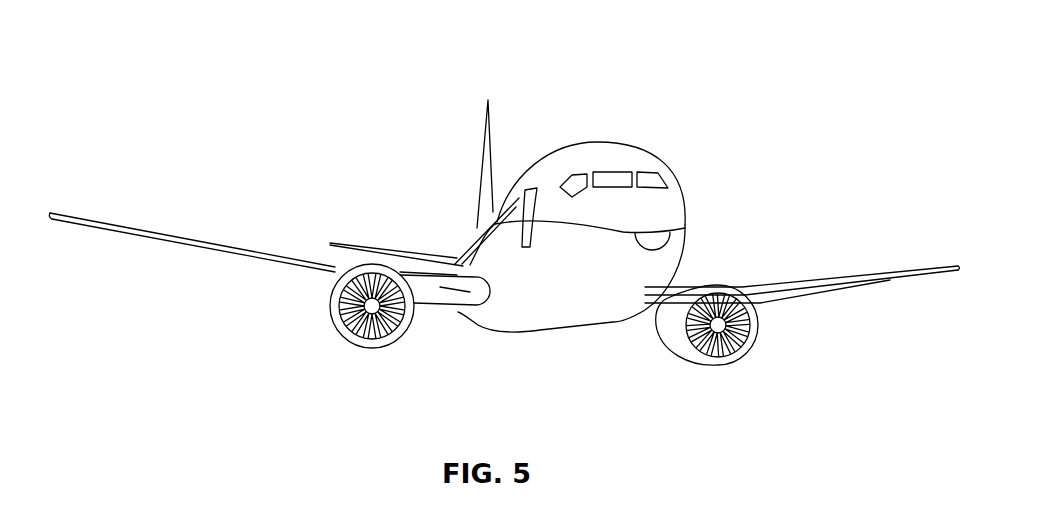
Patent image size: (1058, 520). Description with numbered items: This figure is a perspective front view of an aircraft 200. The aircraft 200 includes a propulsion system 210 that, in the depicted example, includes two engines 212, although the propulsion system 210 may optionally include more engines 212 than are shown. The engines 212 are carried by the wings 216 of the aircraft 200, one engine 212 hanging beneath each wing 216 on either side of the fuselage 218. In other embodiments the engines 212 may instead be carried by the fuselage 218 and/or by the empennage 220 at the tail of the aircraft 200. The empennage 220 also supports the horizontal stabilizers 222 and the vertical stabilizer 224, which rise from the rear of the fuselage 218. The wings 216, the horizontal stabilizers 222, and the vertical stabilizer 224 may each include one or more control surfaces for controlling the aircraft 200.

The aircraft 200 is at (281, 55).
The propulsion system 210 is at (308, 302).
The engines 212 is at (367, 348).
The wings 216 is at (173, 238).
The fuselage 218 is at (683, 200).
The empennage 220 is at (478, 232).
The horizontal stabilizers 222 is at (360, 243).
The vertical stabilizer 224 is at (487, 135).